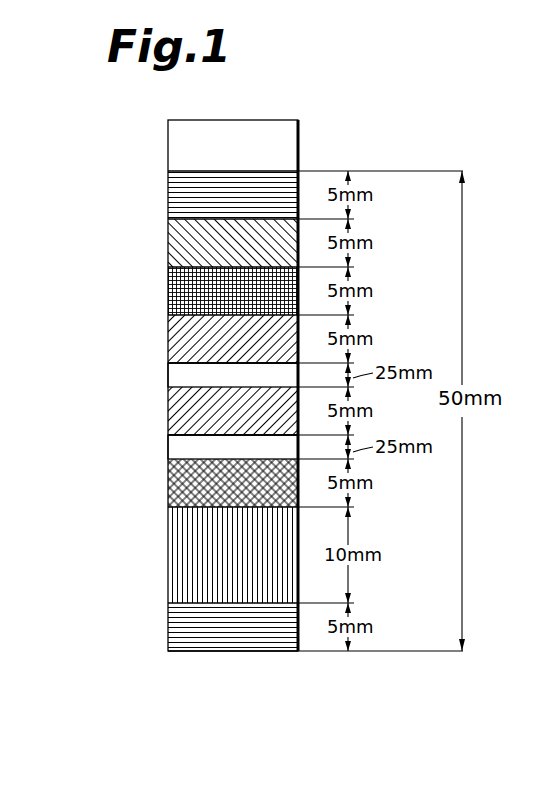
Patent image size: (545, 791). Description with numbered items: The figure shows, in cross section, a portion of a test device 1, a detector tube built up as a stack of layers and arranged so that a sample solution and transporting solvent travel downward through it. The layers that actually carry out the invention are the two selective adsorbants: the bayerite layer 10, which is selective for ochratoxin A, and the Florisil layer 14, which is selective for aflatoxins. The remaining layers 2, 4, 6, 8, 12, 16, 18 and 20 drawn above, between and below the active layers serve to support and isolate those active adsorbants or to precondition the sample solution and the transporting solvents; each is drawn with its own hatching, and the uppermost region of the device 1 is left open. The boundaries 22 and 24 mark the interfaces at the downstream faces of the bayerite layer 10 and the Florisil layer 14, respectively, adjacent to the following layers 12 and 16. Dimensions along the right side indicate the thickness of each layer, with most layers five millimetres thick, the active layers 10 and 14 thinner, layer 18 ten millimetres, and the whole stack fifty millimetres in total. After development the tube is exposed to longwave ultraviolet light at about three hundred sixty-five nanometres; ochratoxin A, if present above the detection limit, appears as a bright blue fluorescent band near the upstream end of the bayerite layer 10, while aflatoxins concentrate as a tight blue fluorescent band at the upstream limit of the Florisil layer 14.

The layered test sample 1 is at (160, 150).
The first layer (horizontal hatch) 2 is at (159, 191).
The second layer 4 is at (159, 247).
The third layer 6 is at (159, 292).
The fourth layer 8 is at (159, 338).
The bayerite layer 10 is at (159, 375).
The sixth layer 12 is at (159, 416).
The Florisil layer 14 is at (159, 449).
The eighth layer (cross hatch) 16 is at (159, 483).
The ninth layer (vertical hatch) 18 is at (159, 545).
The tenth layer 20 is at (159, 615).
The interface between layers 8 and 10 22 is at (310, 358).
The interface between layers 12 and 14 24 is at (310, 432).